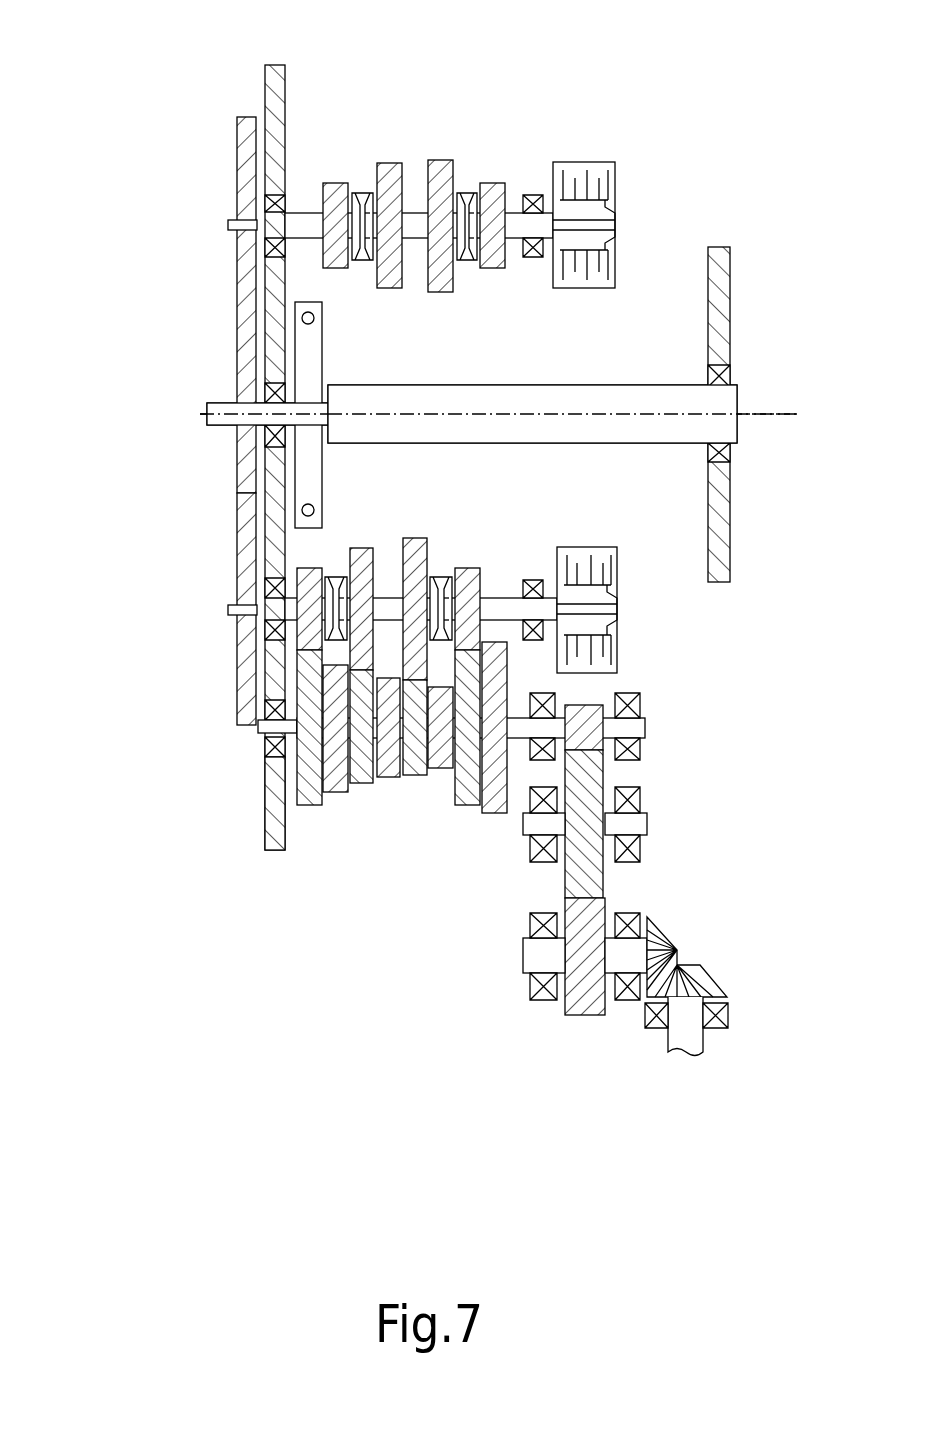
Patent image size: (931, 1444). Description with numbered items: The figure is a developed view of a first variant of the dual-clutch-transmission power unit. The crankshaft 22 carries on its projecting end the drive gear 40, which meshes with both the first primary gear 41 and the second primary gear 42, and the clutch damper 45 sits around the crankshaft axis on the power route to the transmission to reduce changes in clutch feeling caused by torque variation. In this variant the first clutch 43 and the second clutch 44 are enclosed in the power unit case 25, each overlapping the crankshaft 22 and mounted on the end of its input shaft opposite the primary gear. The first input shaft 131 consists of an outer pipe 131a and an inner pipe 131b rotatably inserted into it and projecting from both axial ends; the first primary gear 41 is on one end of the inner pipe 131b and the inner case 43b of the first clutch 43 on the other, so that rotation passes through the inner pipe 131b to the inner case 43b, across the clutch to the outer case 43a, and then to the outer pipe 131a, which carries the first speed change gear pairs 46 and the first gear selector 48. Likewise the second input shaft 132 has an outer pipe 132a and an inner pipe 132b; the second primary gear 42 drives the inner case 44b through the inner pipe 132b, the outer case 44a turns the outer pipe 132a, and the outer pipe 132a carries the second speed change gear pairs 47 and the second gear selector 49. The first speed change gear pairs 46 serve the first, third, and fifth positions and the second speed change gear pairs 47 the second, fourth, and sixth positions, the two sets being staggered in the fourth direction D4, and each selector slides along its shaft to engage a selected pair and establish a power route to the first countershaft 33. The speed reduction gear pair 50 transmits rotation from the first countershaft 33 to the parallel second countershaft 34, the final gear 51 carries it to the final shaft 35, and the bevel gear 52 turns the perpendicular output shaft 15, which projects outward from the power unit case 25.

The output shaft 15 is at (703, 1040).
The crankshaft 22 is at (207, 407).
The power unit case 25 is at (268, 812).
The first countershaft 33 is at (255, 735).
The second countershaft 34 is at (647, 818).
The final shaft 35 is at (523, 960).
The drive gear 40 is at (240, 477).
The first primary gear 41 is at (237, 130).
The second primary gear 42 is at (233, 700).
The first clutch 43 is at (777, 50).
The outer case 43a is at (610, 160).
The inner case 43b is at (615, 210).
The second clutch 44 is at (777, 580).
The outer case 44a is at (617, 672).
The inner case 44b is at (617, 625).
The clutch damper 45 is at (305, 362).
The first speed change gear pairs 46 is at (493, 183).
The second speed change gear pairs 47 is at (467, 807).
The first gear selector 48 is at (467, 262).
The second gear selector 49 is at (468, 568).
The speed reduction gear pair 50 is at (593, 705).
The final gear 51 is at (580, 1015).
The bevel gear 52 is at (705, 967).
The first input shaft 131 is at (103, 118).
The outer pipe 131a is at (305, 217).
The inner pipe 131b is at (228, 224).
The second input shaft 132 is at (108, 562).
The outer pipe 132a is at (275, 618).
The inner pipe 132b is at (228, 610).
The fourth direction D4 is at (770, 413).